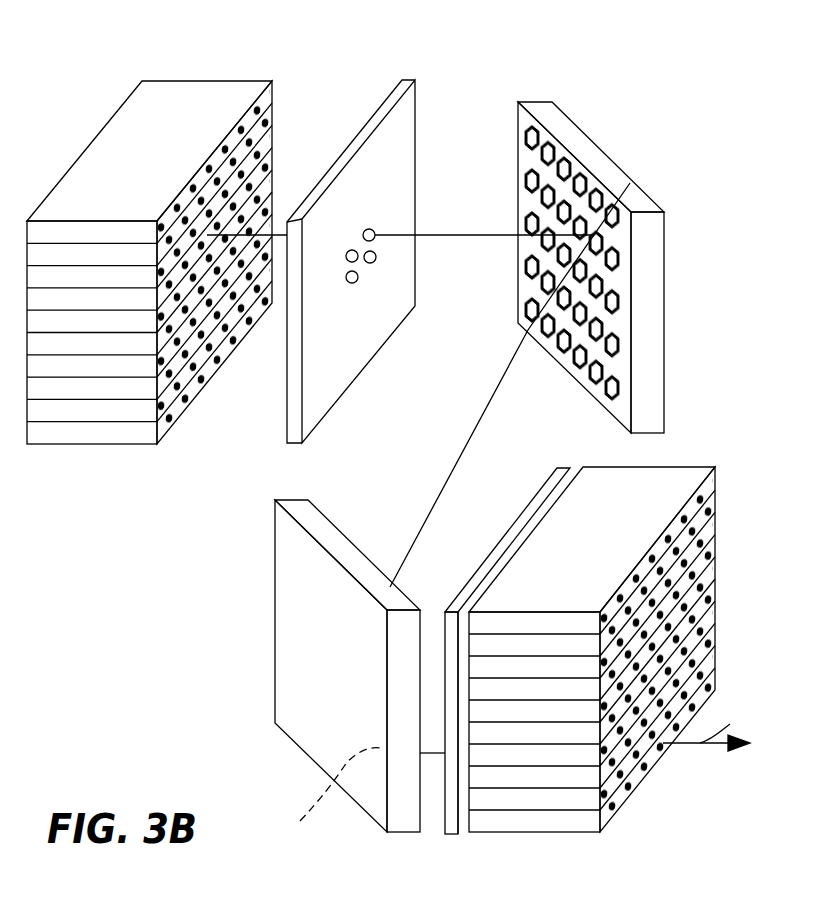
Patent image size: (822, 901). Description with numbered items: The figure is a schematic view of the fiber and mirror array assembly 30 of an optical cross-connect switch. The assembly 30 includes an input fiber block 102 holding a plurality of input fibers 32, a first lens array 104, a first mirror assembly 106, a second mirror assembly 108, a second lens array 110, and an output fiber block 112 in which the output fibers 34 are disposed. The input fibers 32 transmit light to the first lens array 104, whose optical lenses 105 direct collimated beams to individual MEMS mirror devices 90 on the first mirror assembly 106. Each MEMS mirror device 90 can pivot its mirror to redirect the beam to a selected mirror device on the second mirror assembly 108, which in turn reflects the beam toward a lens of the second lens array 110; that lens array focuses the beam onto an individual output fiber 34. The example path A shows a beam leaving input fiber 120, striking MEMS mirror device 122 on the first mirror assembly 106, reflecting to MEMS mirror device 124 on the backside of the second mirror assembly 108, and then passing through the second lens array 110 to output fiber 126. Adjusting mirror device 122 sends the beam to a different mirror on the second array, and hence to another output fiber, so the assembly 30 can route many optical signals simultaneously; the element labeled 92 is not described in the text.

The fiber and mirror array assembly 30 is at (198, 728).
The input fibers 32 is at (216, 167).
The output fibers 34 is at (702, 552).
The MEMS mirror device 90 is at (508, 190).
The element 92 is at (758, 0).
The input fiber block 102 is at (168, 223).
The first lens array 104 is at (413, 90).
The optical lenses 105 is at (376, 262).
The first mirror assembly 106 is at (595, 267).
The second mirror assembly 108 is at (319, 666).
The second lens array 110 is at (557, 468).
The output fiber block 112 is at (621, 608).
The input fiber 120 is at (207, 235).
The MEMS mirror device 122 is at (630, 183).
The MEMS mirror device 124 is at (353, 790).
The output fiber 126 is at (665, 746).